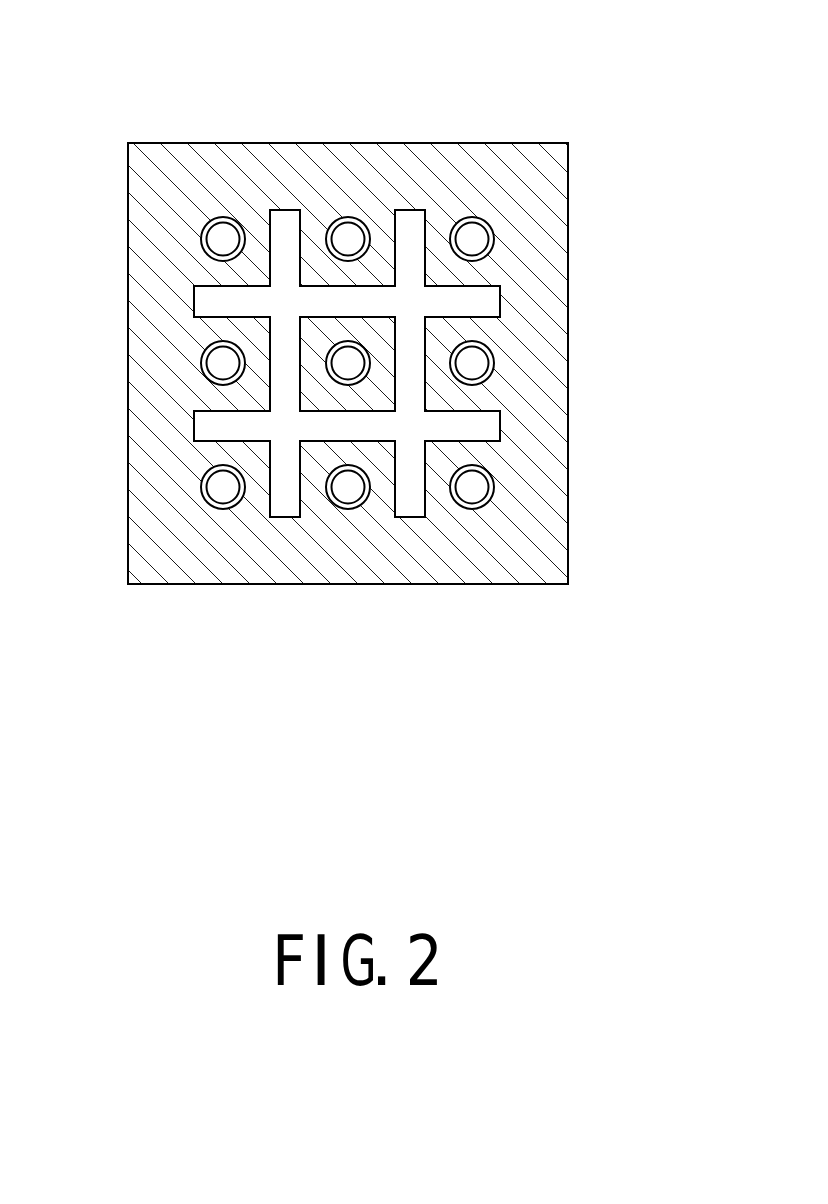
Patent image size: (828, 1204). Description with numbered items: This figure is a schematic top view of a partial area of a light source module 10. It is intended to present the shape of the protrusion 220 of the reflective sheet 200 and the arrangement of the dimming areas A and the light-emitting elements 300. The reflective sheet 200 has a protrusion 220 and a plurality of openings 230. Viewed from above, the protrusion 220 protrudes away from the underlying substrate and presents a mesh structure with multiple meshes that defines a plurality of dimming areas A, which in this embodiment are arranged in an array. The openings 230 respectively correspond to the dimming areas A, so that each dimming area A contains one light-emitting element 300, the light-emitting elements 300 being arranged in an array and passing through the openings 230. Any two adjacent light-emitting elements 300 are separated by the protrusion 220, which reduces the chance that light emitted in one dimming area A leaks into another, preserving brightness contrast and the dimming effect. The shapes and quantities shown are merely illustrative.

The light source module 10 is at (414, 297).
The reflective sheet 200 is at (540, 250).
The protrusion 220 is at (480, 300).
The openings 230 is at (368, 228).
The light-emitting elements 300 is at (348, 235).
The dimming areas A is at (312, 227).